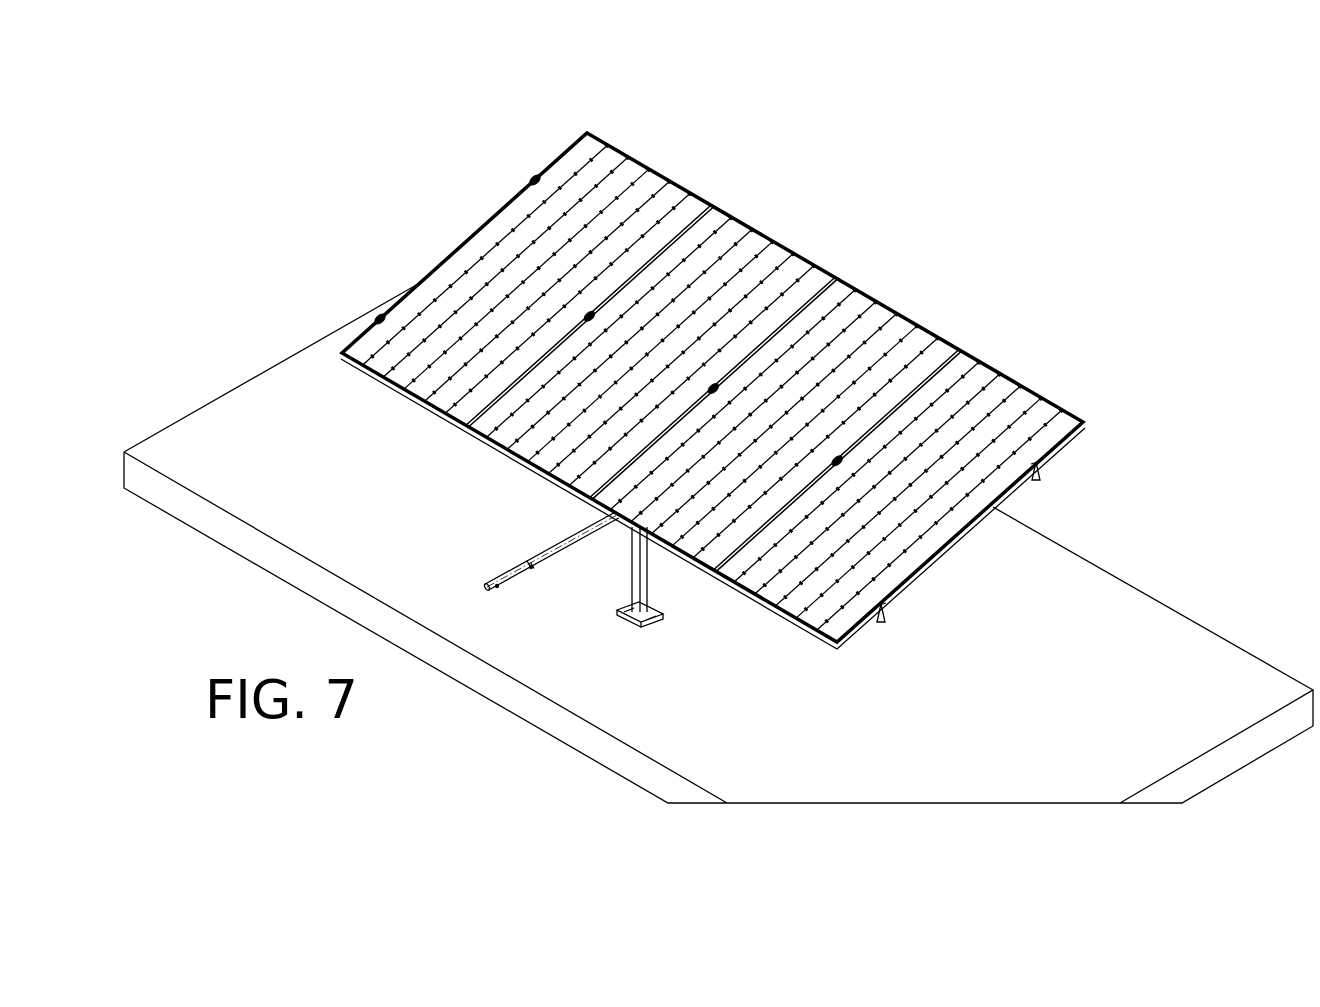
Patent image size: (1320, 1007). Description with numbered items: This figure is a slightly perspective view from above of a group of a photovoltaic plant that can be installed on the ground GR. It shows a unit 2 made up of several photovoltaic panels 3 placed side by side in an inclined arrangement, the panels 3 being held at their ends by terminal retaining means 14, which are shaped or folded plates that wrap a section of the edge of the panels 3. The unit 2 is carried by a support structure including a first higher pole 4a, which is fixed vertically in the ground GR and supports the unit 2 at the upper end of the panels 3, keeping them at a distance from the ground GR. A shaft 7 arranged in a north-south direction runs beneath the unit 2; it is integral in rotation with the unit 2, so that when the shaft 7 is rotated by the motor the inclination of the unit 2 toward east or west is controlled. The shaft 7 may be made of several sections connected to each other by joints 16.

The unit 2 is at (713, 352).
The photovoltaic panel 3 is at (630, 166).
The terminal retaining means 14 is at (533, 178).
The first higher pole 4a is at (650, 585).
The shaft 7 is at (590, 553).
The joint 16 is at (508, 574).
The ground GR is at (633, 765).